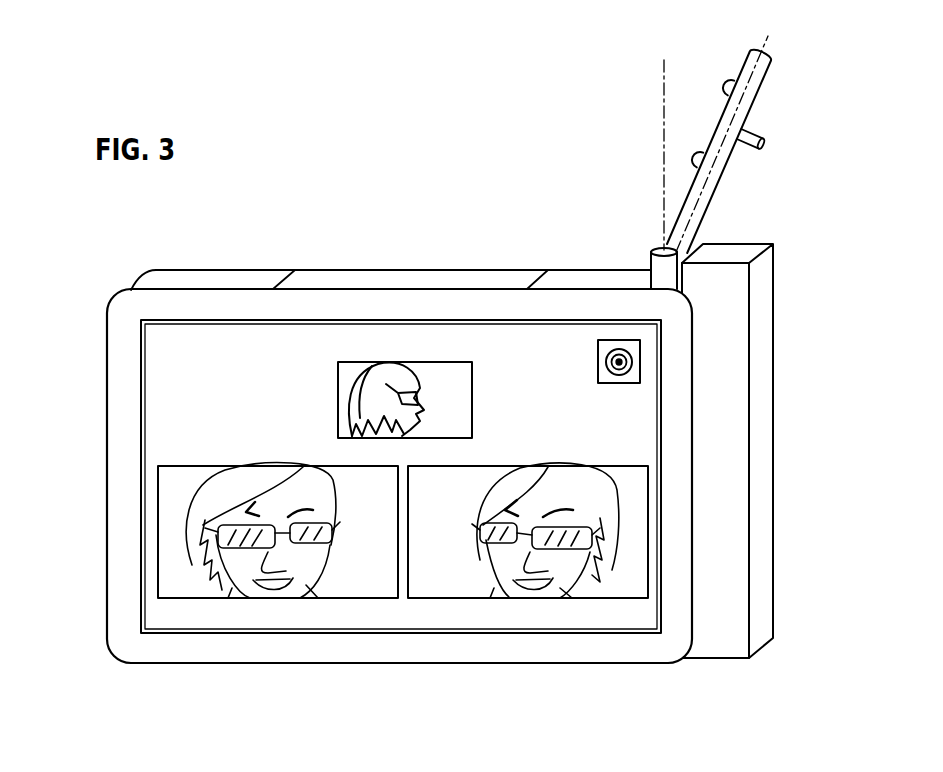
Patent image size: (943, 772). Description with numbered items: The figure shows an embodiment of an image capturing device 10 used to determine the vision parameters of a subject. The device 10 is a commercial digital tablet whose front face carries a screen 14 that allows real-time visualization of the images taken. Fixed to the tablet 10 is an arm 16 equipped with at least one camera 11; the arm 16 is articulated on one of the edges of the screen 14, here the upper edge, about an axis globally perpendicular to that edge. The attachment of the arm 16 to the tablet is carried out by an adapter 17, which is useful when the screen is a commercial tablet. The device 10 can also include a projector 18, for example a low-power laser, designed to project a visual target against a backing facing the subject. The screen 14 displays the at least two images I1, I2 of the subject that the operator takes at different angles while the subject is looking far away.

The image capturing device 10 is at (430, 218).
The video camera 11 is at (716, 76).
The screen 14 is at (178, 496).
The arm 16 is at (750, 97).
The adapter 17 is at (761, 427).
The projector 18 is at (761, 146).
The first image I1 is at (200, 580).
The second image I2 is at (608, 580).